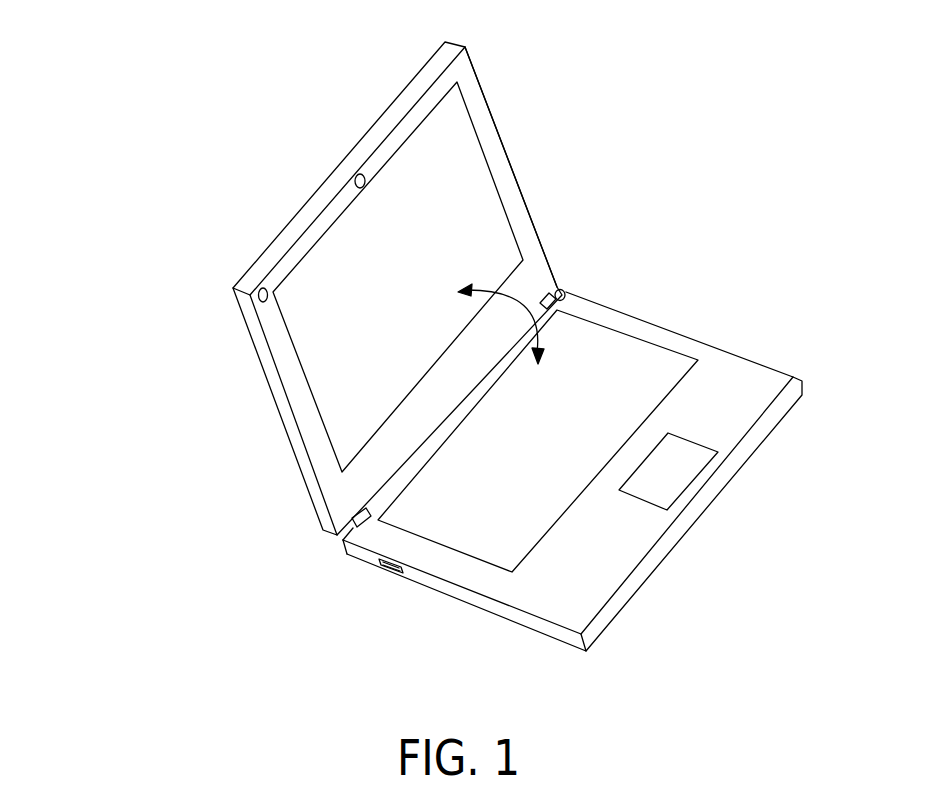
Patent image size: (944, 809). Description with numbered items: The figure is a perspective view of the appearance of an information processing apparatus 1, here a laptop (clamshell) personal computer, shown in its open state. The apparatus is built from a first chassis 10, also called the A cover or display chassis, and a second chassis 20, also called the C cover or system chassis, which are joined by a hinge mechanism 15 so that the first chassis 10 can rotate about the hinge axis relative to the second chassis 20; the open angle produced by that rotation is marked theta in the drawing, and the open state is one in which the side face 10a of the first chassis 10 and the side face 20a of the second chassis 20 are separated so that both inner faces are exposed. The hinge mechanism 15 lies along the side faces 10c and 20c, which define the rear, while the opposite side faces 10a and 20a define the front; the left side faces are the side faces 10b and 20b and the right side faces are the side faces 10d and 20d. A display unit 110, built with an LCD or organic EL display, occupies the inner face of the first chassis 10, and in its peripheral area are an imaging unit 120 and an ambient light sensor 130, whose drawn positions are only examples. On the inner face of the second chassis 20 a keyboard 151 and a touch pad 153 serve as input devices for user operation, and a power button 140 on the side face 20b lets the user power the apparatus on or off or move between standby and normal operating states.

The information processing apparatus 1 is at (88, 58).
The first chassis 10 is at (212, 461).
The side face 10a is at (292, 237).
The side face 10b is at (270, 370).
The side face 10c is at (559, 284).
The side face 10d is at (497, 122).
The display unit 110 is at (495, 233).
The imaging unit 120 is at (363, 173).
The ambient light sensor 130 is at (263, 303).
The hinge mechanism 15 is at (375, 503).
The second chassis 20 is at (680, 610).
The side face 20a is at (786, 403).
The side face 20b is at (508, 612).
The side face 20c is at (345, 548).
The side face 20d is at (767, 362).
The power button 140 is at (390, 568).
The keyboard 151 is at (638, 368).
The touch pad 153 is at (684, 476).